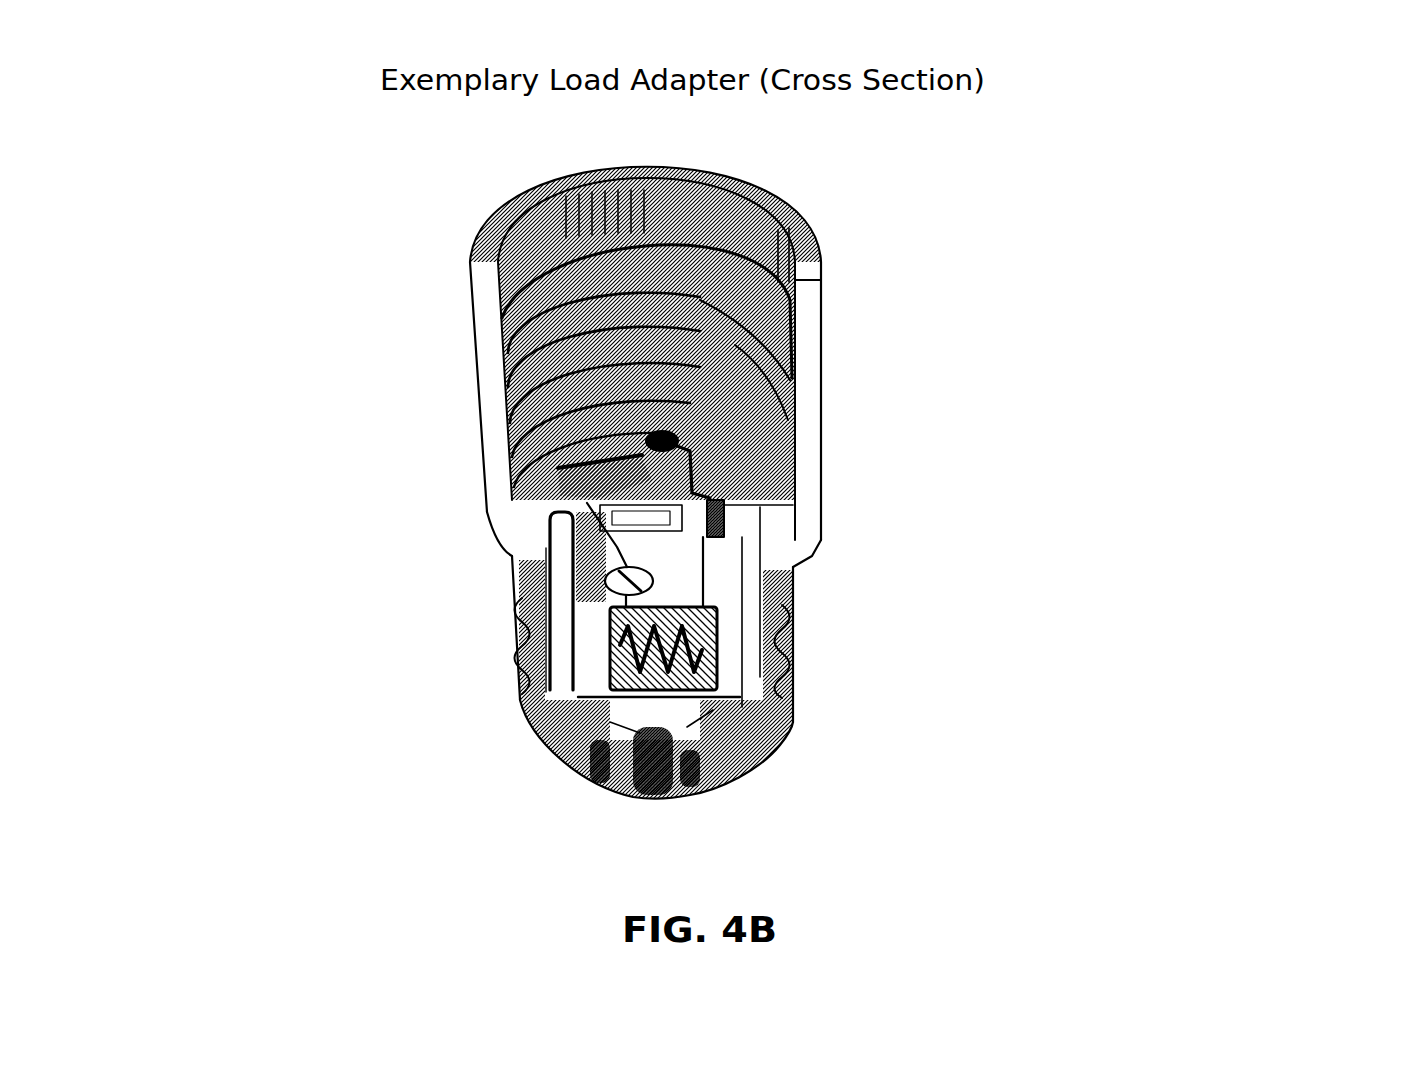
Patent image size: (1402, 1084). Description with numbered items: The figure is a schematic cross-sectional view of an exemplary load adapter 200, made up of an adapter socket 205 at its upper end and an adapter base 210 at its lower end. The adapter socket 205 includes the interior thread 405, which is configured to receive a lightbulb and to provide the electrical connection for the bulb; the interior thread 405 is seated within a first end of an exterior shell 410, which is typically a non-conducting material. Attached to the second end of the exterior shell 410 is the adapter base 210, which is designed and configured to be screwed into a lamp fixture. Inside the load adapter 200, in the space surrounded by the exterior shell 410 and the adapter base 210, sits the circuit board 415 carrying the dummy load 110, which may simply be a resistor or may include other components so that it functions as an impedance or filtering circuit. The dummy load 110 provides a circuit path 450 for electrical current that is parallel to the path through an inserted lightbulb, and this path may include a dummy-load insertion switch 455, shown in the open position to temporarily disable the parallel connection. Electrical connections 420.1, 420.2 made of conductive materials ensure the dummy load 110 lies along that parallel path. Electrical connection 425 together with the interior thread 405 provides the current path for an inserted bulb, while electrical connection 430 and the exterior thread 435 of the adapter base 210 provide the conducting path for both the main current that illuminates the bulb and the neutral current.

The load adapter 200 is at (118, 92).
The adapter socket 205 is at (1122, 175).
The adapter base 210 is at (929, 575).
The interior thread 405 is at (723, 330).
The exterior shell 410 is at (488, 332).
The circuit board 415 is at (587, 565).
The electrical connection 420.1 is at (583, 505).
The electrical connection 420.2 is at (724, 518).
The electrical connection 425 is at (653, 437).
The electrical connection 430 is at (657, 767).
The exterior thread 435 is at (518, 661).
The circuit path 450 is at (622, 546).
The dummy-load insertion switch 455 is at (607, 589).
The dummy load 110 is at (637, 657).